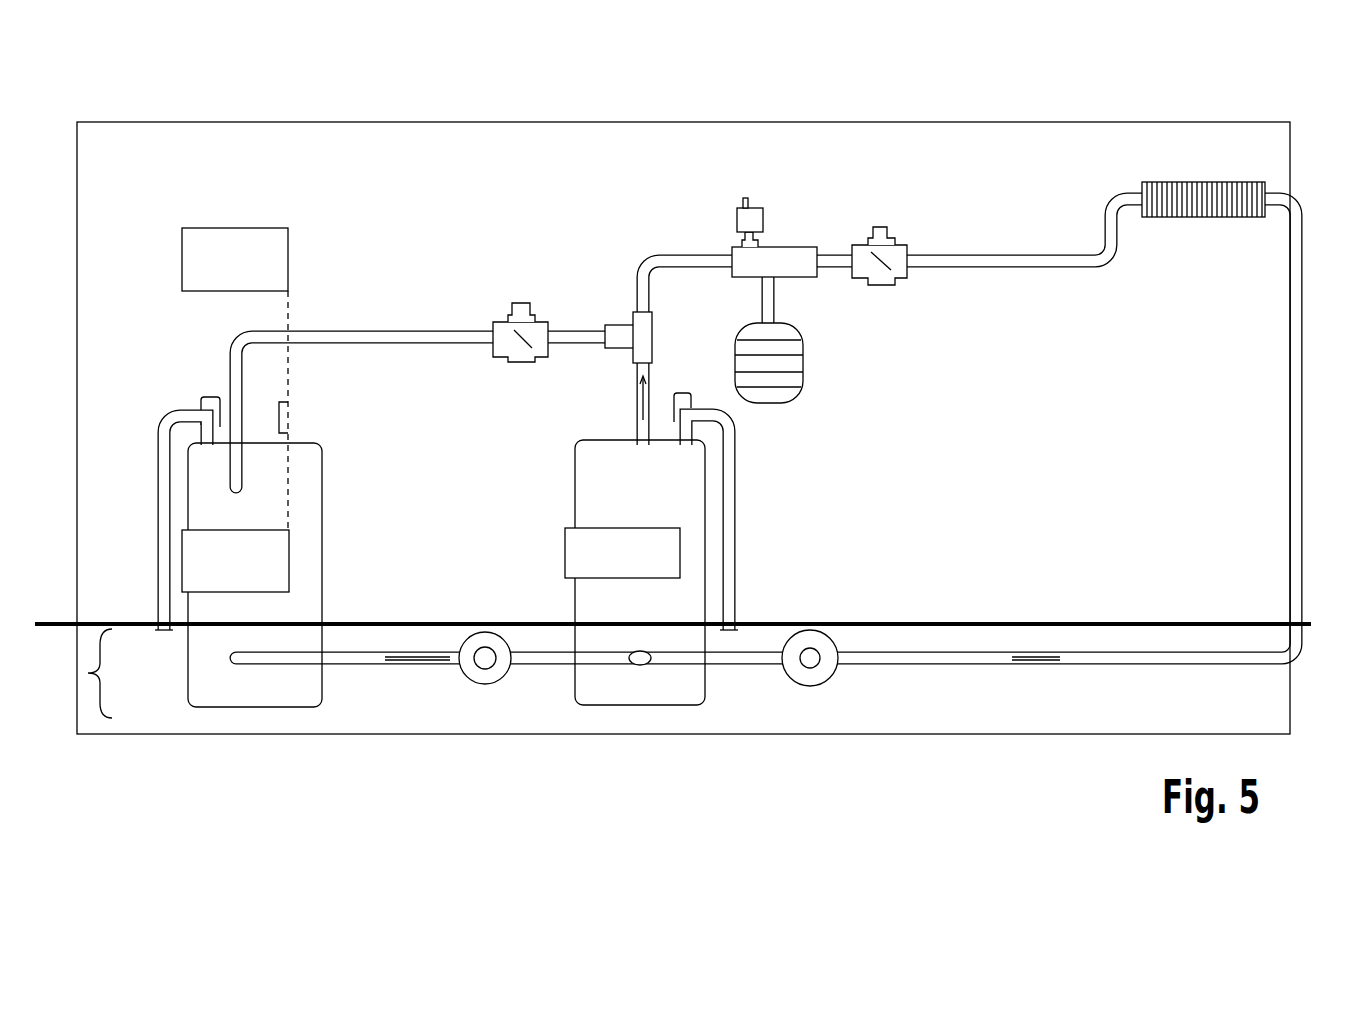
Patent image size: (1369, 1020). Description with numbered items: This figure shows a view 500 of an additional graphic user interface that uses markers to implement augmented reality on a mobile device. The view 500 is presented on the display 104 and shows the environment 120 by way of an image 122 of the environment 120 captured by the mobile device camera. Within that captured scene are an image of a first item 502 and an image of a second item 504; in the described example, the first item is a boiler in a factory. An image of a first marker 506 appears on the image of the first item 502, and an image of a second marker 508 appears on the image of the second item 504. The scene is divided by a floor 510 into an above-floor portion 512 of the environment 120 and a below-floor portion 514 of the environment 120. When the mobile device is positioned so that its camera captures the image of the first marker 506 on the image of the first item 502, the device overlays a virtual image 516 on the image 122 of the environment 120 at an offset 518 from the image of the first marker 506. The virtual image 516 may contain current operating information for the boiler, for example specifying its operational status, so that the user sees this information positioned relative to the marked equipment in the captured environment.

The view 500 is at (670, 84).
The display 104 is at (942, 734).
The environment 120 is at (77, 623).
The image of the environment 122 is at (1310, 626).
The image of a first item 502 is at (305, 527).
The image of a second item 504 is at (562, 593).
The image of a first marker 506 is at (258, 592).
The image of a second marker 508 is at (648, 578).
The floor 510 is at (1057, 622).
The above-floor portion 512 is at (1286, 160).
The below-floor portion 514 is at (74, 673).
The virtual image 516 is at (182, 228).
The offset 518 is at (288, 365).